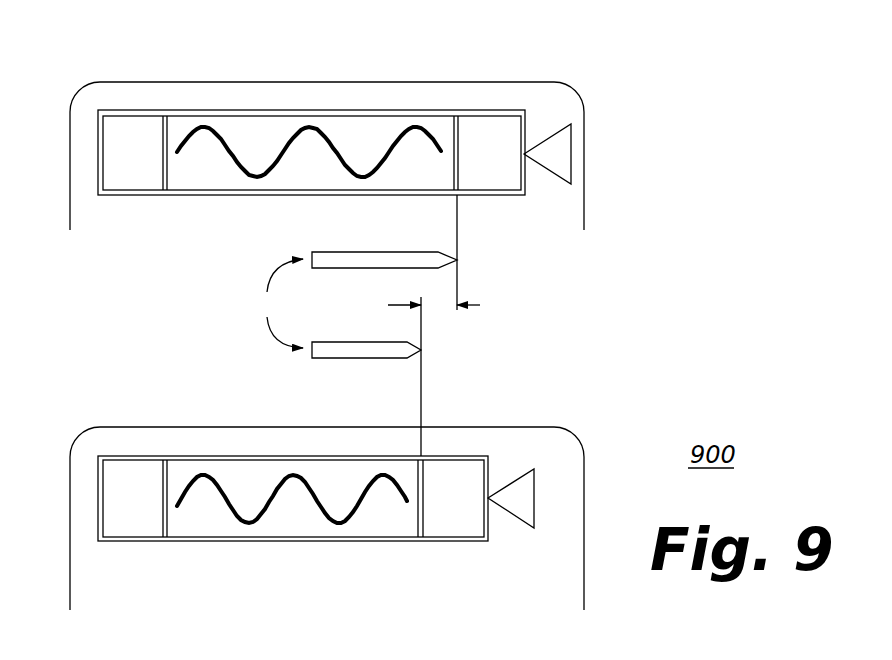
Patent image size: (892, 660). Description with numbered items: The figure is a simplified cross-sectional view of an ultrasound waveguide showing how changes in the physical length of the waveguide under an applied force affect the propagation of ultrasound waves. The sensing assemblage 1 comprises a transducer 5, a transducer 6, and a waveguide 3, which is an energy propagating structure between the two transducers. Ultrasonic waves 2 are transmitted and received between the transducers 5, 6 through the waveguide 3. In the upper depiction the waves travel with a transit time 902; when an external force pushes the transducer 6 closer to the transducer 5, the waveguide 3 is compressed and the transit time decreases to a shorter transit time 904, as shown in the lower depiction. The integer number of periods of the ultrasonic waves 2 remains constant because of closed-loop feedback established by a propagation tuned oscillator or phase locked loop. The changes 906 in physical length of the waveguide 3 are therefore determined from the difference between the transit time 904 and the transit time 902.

The sensing assemblage 1 is at (523, 63).
The ultrasonic waves 2 is at (364, 177).
The waveguide 3 is at (207, 178).
The transducer 5 is at (108, 162).
The transducer 6 is at (493, 183).
The transit time 902 is at (355, 252).
The transit time 904 is at (368, 358).
The changes in physical length 906 is at (437, 303).